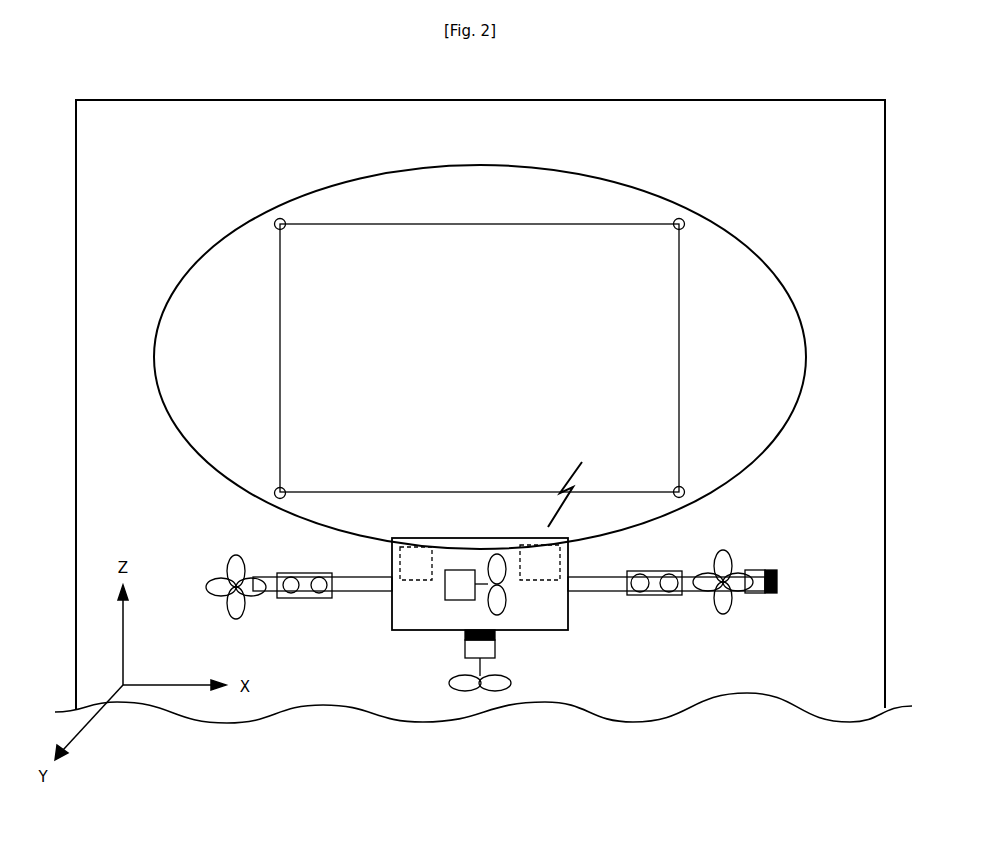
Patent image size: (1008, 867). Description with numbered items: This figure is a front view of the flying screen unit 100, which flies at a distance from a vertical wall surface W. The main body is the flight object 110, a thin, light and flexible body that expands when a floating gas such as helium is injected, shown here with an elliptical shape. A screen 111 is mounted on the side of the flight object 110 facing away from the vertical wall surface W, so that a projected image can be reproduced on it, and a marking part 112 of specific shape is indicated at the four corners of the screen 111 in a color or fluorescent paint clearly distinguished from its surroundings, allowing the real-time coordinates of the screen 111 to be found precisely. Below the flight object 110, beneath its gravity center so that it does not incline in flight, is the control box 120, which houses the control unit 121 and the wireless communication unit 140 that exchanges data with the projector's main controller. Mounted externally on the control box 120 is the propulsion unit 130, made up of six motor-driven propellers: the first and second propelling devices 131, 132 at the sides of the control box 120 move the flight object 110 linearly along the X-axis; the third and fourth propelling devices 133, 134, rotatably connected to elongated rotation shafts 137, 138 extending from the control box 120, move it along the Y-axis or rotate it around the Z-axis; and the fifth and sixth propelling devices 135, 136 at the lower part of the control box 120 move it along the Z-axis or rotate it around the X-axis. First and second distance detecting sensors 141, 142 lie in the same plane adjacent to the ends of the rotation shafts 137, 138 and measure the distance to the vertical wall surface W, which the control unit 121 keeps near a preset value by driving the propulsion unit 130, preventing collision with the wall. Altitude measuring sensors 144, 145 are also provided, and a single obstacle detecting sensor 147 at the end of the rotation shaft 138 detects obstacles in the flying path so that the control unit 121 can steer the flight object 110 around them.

The vertical wall surface W is at (478, 100).
The flying screen unit 100 is at (177, 226).
The flight object 110 is at (480, 165).
The screen 111 is at (564, 224).
The marking part 112 is at (280, 218).
The control box 120 is at (530, 620).
The control unit 121 is at (415, 580).
The propulsion unit 130 is at (468, 697).
The first propelling device 131 is at (443, 630).
The second propelling device 132 is at (488, 610).
The third propelling device 133 is at (240, 615).
The fourth propelling device 134 is at (725, 612).
The fifth propelling device 135 is at (500, 720).
The sixth propelling device 136 is at (532, 757).
The rotation shaft 137 is at (362, 577).
The rotation shaft 138 is at (610, 577).
The wireless communication unit 140 is at (540, 580).
The first distance detecting sensor 141 is at (305, 598).
The second distance detecting sensor 142 is at (652, 595).
The altitude measuring sensor 144 is at (538, 695).
The altitude measuring sensor 145 is at (497, 632).
The obstacle detecting sensor 147 is at (779, 582).